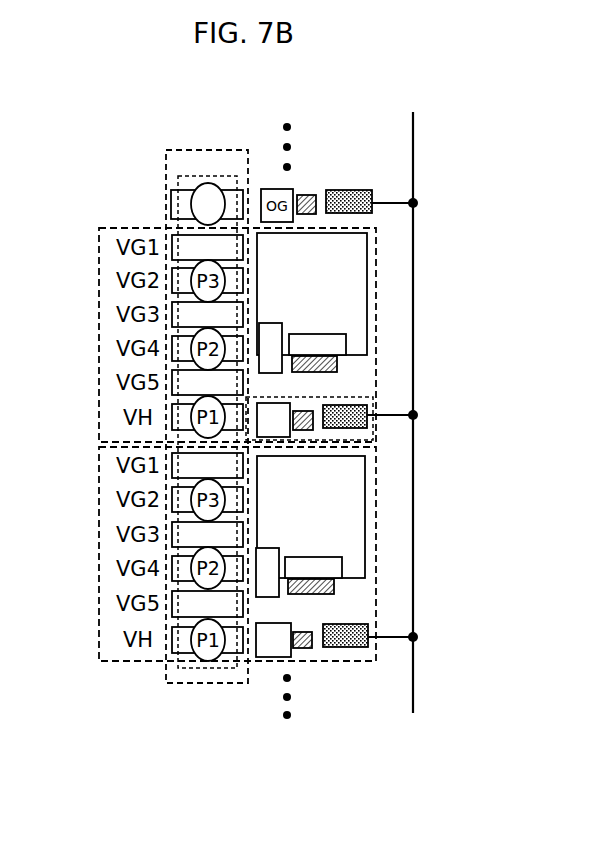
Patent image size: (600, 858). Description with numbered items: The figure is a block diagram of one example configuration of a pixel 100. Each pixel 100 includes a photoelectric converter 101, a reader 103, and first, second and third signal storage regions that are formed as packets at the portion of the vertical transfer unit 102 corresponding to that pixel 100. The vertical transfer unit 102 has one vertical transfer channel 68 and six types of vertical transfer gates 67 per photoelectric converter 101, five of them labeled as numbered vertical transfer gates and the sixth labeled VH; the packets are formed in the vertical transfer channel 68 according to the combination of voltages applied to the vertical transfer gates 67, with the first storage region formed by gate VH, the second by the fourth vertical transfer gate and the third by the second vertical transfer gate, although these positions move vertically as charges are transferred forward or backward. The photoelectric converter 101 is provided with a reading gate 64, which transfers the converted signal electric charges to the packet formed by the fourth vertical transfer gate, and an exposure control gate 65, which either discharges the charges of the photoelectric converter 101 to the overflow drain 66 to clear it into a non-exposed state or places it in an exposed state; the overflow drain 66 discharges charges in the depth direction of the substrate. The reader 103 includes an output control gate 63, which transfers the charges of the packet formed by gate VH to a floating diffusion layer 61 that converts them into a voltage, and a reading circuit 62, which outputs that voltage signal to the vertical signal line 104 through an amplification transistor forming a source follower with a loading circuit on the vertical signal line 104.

The pixel 100 is at (97, 246).
The photoelectric converter 101 is at (357, 250).
The vertical transfer unit 102 is at (197, 150).
The reader 103 is at (372, 403).
The vertical signal line 104 is at (414, 520).
The floating diffusion layer 61 is at (305, 432).
The reading circuit 62 is at (355, 430).
The output control gate 63 is at (272, 438).
The reading gate 64 is at (272, 323).
The exposure control gate 65 is at (310, 334).
The overflow drain 66 is at (328, 373).
The vertical transfer gates 67 is at (171, 200).
The vertical transfer channel 68 is at (200, 176).